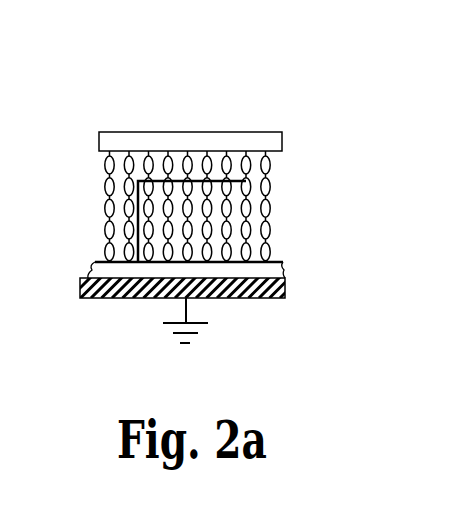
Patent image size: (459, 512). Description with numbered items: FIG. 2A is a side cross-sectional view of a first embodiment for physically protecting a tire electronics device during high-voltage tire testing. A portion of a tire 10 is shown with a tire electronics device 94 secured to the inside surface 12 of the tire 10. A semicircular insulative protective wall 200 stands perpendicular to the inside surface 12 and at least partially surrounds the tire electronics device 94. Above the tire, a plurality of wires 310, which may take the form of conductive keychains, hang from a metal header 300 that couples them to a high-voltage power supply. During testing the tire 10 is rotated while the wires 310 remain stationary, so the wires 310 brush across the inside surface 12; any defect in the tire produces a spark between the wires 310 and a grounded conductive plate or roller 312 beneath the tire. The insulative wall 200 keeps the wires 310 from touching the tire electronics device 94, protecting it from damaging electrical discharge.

The metal header 300 is at (268, 132).
The wires 310 is at (105, 166).
The tire electronics device 94 is at (198, 248).
The wall 200 is at (238, 181).
The inside surface 12 is at (94, 263).
The tire 10 is at (280, 272).
The grounded conductive plate or roller 312 is at (283, 298).